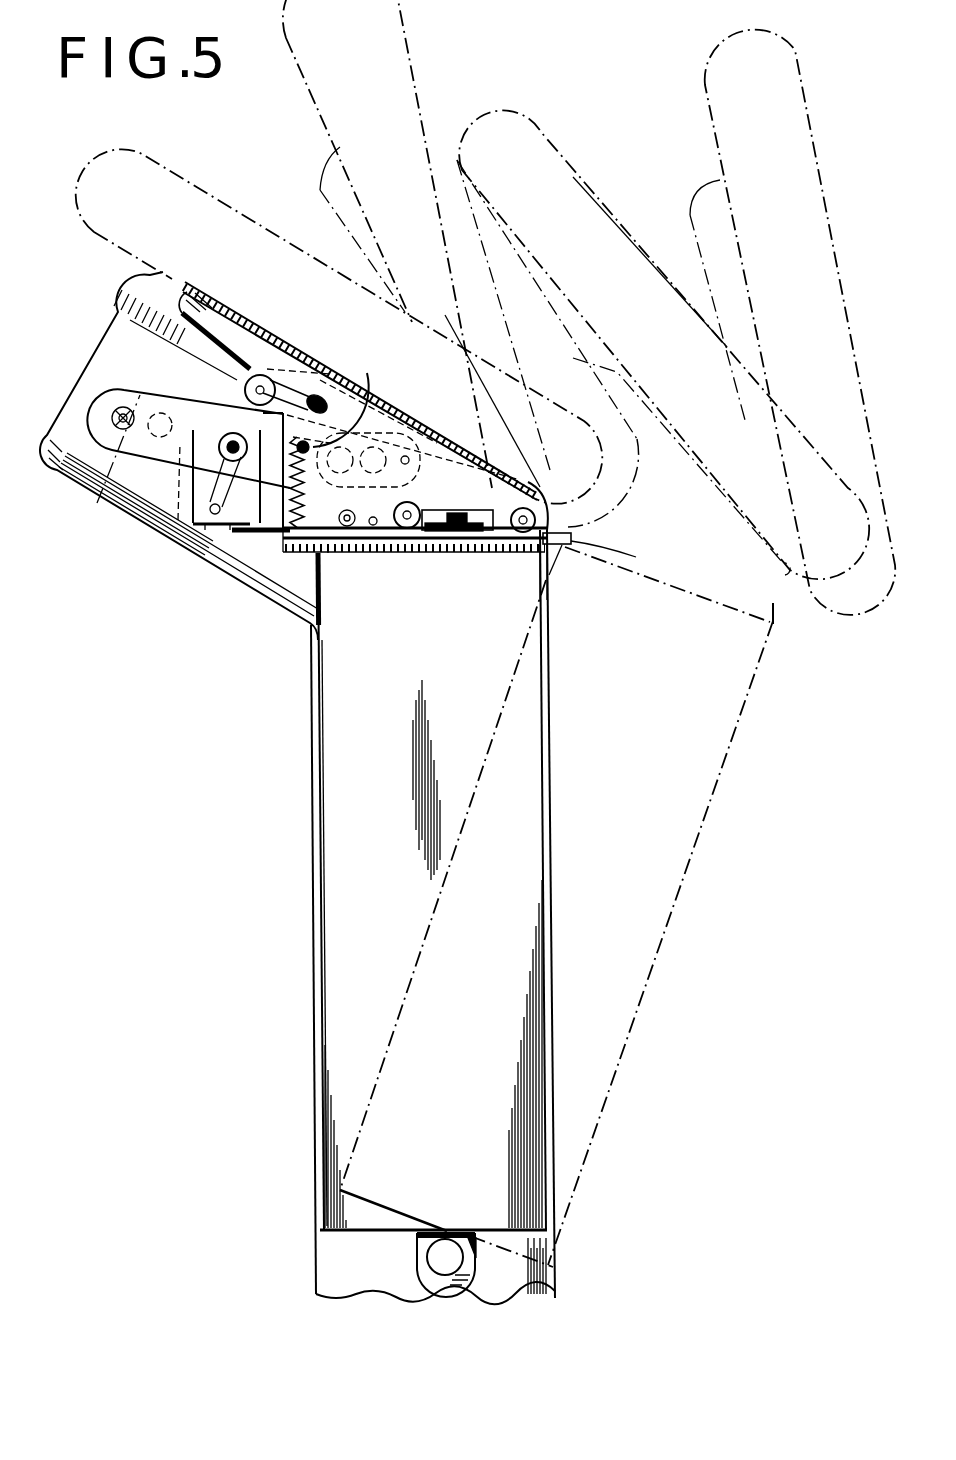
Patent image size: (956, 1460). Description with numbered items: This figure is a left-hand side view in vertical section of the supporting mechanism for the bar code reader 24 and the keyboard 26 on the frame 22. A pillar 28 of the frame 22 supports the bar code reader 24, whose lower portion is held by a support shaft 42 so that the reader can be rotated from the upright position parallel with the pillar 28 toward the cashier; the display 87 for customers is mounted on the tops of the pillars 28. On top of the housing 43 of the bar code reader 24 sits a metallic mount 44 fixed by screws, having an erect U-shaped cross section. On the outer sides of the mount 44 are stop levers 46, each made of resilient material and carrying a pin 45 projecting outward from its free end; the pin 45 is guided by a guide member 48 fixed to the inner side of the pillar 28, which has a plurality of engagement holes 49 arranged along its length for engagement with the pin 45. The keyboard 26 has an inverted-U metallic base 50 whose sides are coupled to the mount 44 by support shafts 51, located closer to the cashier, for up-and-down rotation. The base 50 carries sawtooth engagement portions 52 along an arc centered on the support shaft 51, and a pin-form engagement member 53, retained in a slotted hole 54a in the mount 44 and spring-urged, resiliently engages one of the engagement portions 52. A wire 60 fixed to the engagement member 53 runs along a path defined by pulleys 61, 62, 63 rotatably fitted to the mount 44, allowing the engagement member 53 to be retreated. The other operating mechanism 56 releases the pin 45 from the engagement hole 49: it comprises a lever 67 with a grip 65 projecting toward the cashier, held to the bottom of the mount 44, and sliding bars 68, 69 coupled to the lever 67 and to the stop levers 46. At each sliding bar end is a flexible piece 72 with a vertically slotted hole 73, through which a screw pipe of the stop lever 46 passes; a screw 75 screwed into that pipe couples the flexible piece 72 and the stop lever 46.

The frame 22 is at (312, 888).
The bar code reader 24 is at (318, 808).
The keyboard 26 is at (195, 205).
The pillar 28 is at (312, 955).
The support shaft 42 is at (433, 1257).
The housing 43 is at (318, 738).
The mount 44 is at (397, 557).
The pin 45 is at (110, 400).
The stop lever 46 is at (157, 440).
The guide member 48 is at (128, 335).
The engagement hole 49 is at (178, 520).
The base 50 is at (321, 180).
The support shaft 51 is at (542, 487).
The engagement portion 52 is at (363, 400).
The engagement member 53 is at (322, 397).
The slotted hole 54a is at (308, 378).
The operating mechanism 56 is at (676, 574).
The wire 60 is at (430, 557).
The pulley 61 is at (480, 553).
The pulley 62 is at (430, 443).
The pulley 63 is at (238, 360).
The grip 65 is at (615, 520).
The lever 67 is at (545, 577).
The sliding bar 68 is at (262, 535).
The sliding bar 69 is at (328, 553).
The flexible piece 72 is at (207, 530).
The slotted hole 73 is at (232, 530).
The screw 75 is at (230, 430).
The display 87 is at (97, 503).